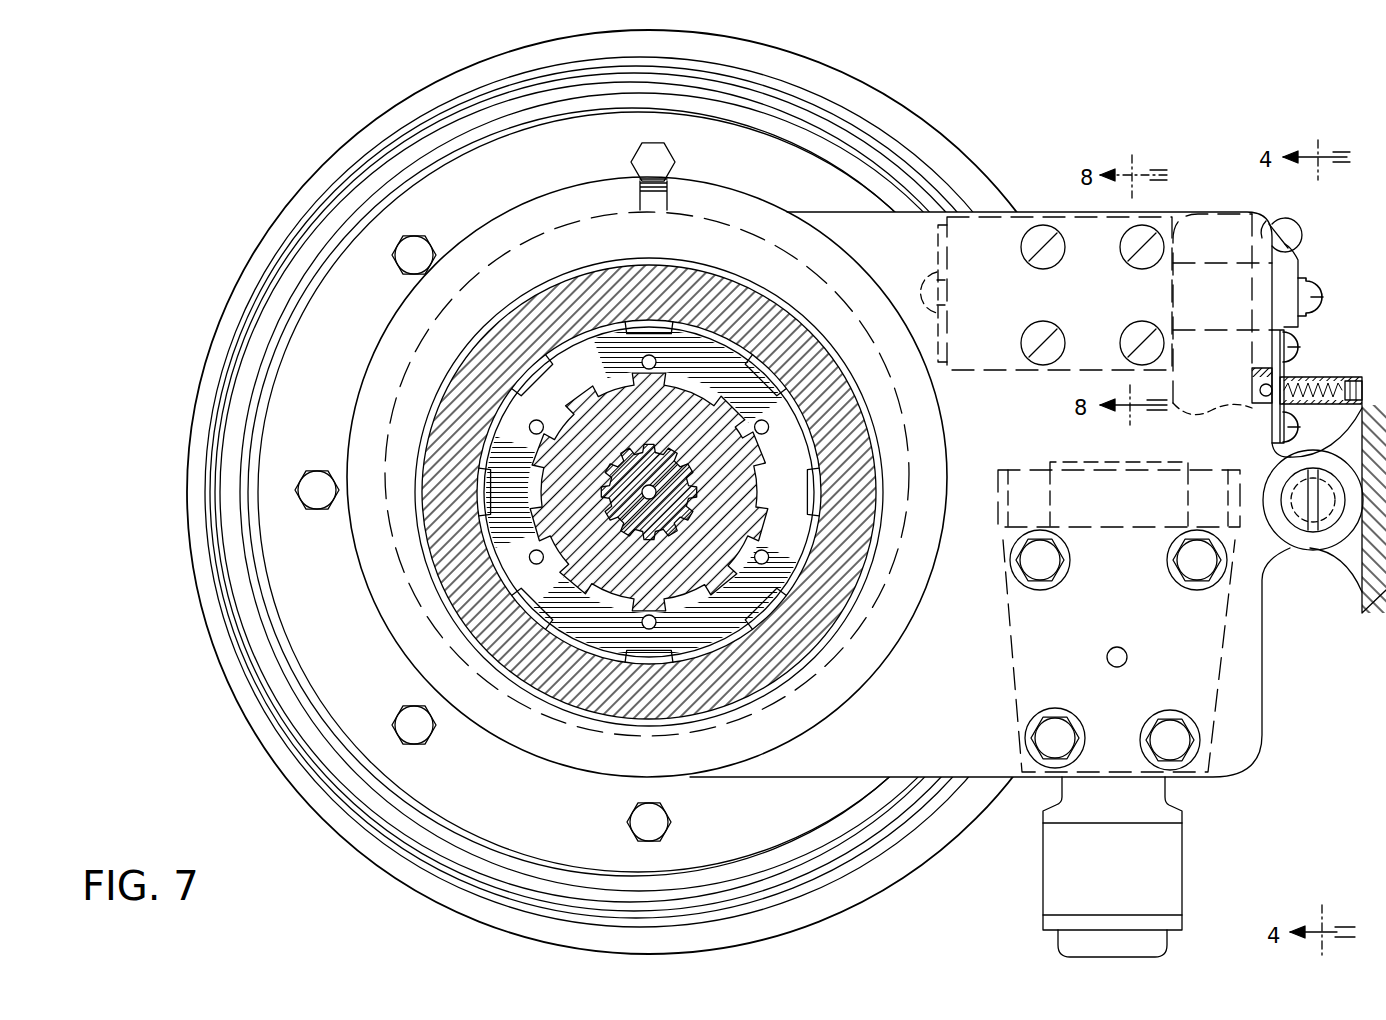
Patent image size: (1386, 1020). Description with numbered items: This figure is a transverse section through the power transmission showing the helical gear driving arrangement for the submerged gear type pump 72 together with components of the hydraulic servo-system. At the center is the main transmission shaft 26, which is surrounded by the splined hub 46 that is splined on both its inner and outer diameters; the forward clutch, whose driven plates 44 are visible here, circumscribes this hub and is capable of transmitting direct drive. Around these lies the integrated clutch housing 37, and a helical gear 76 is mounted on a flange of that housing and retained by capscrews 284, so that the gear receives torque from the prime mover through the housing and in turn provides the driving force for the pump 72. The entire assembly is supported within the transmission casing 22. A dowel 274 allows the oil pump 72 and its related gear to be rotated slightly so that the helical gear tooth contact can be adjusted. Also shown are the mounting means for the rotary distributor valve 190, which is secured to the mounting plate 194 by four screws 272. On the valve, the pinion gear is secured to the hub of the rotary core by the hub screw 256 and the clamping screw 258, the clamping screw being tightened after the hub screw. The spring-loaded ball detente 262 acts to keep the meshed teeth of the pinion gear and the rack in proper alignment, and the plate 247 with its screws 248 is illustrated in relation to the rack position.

The helical gear 76 is at (888, 152).
The capscrews 284 is at (640, 158).
The driven plates 44 is at (573, 377).
The main transmission shaft 26 is at (648, 505).
The splined hub 46 is at (740, 512).
The clutch housing 37 is at (490, 612).
The screws 272 is at (1057, 347).
The rotary distributor valve 190 is at (1160, 240).
The clamping screw 258 is at (1287, 235).
The hub screw 256 is at (1322, 302).
The screws 248 is at (1300, 348).
The spring-loaded ball detente 262 is at (1340, 372).
The plate 247 is at (1277, 423).
The casing 22 is at (1332, 545).
The dowel 274 is at (1117, 647).
The mounting plate 194 is at (1240, 700).
The submerged gear type pump 72 is at (1150, 883).